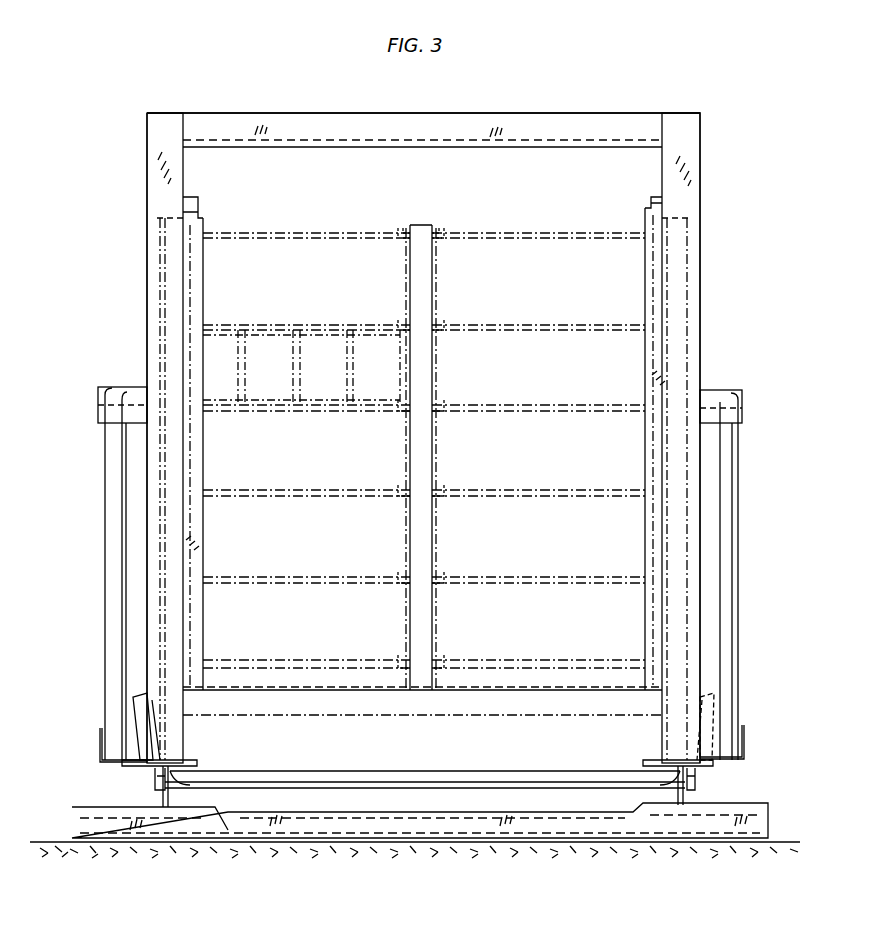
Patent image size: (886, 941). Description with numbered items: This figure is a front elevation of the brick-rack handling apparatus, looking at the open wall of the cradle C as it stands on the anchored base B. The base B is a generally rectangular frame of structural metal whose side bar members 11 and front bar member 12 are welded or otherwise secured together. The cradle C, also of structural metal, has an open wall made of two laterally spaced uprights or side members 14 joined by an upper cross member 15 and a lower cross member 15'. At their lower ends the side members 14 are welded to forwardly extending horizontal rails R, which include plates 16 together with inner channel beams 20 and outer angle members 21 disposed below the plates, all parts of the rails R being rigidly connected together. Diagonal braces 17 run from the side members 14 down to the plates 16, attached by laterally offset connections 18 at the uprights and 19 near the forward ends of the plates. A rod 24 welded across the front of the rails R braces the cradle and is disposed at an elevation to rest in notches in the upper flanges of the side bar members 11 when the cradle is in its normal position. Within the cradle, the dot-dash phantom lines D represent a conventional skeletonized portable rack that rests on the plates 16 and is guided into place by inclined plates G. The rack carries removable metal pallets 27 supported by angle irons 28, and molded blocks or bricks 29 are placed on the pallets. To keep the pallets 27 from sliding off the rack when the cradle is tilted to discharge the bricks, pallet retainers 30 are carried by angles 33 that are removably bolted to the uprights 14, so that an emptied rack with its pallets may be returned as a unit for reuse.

The side bar members 11 is at (160, 800).
The front bar member 12 is at (540, 830).
The side members 14 is at (152, 177).
The upper cross member 15 is at (423, 110).
The lower cross member 15' is at (422, 734).
The plates 16 is at (185, 762).
The diagonal braces 17 is at (107, 560).
The laterally offset connection 18 is at (137, 388).
The laterally offset connection 19 is at (100, 757).
The inner channel beams 20 is at (172, 778).
The outer angle members 21 is at (155, 778).
The rod 24 is at (405, 775).
The pallets 27 is at (515, 240).
The angle irons 28 is at (437, 398).
The blocks or bricks 29 is at (333, 355).
The pallet retainers 30 is at (199, 207).
The angles 33 is at (655, 378).
The base B is at (292, 842).
The cradle C is at (712, 280).
The portable rack D is at (432, 225).
The inclined plates G is at (125, 722).
The horizontal rails R is at (172, 800).